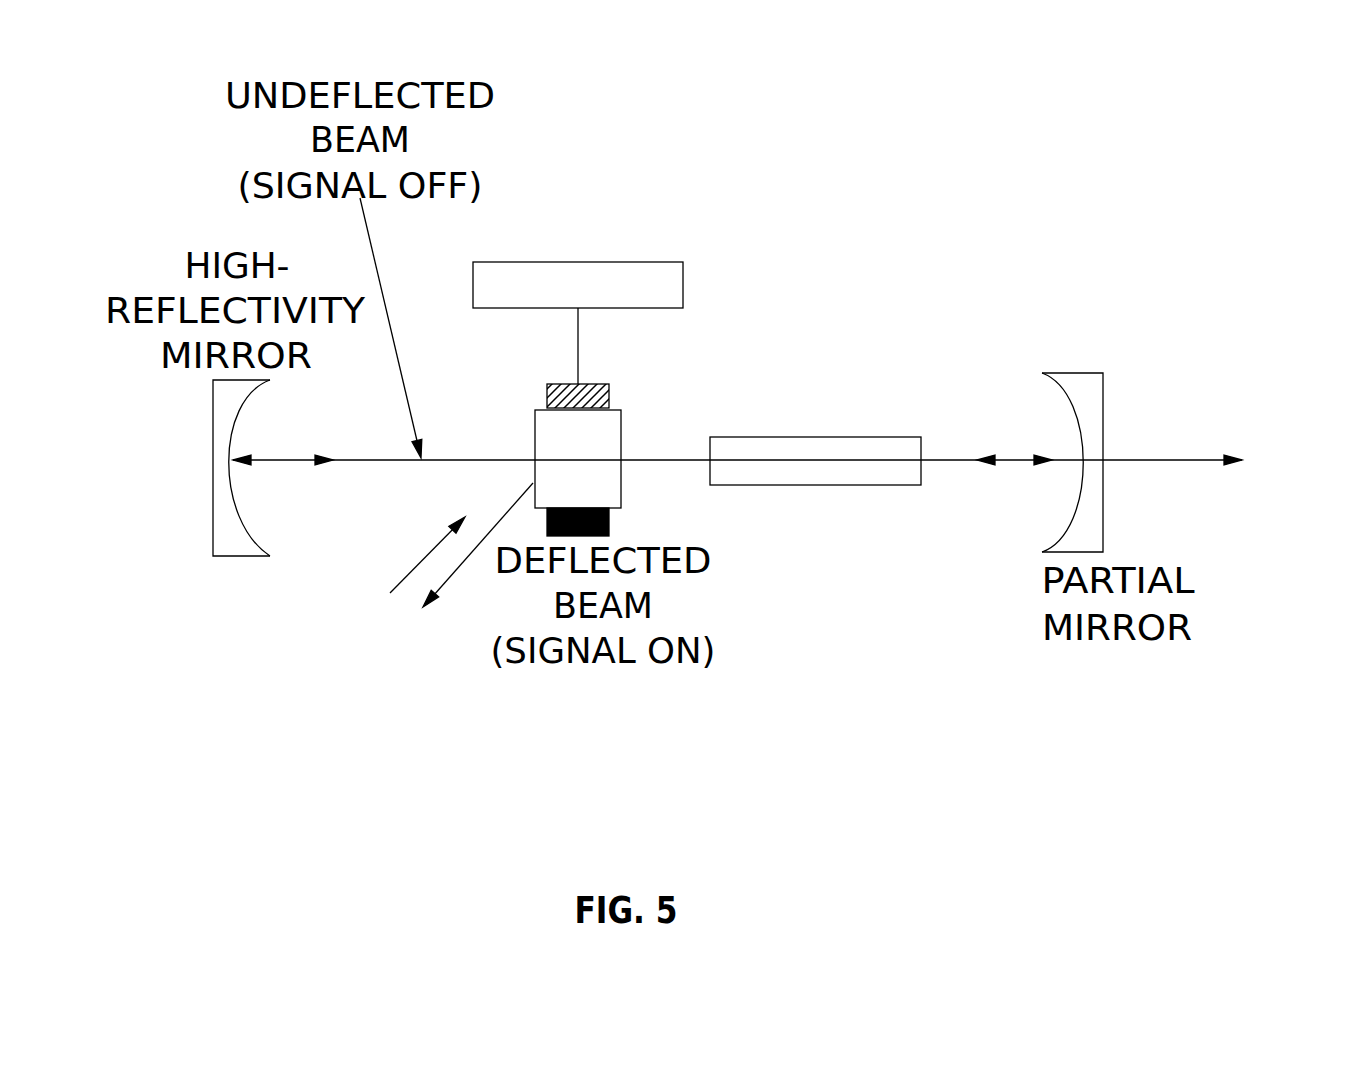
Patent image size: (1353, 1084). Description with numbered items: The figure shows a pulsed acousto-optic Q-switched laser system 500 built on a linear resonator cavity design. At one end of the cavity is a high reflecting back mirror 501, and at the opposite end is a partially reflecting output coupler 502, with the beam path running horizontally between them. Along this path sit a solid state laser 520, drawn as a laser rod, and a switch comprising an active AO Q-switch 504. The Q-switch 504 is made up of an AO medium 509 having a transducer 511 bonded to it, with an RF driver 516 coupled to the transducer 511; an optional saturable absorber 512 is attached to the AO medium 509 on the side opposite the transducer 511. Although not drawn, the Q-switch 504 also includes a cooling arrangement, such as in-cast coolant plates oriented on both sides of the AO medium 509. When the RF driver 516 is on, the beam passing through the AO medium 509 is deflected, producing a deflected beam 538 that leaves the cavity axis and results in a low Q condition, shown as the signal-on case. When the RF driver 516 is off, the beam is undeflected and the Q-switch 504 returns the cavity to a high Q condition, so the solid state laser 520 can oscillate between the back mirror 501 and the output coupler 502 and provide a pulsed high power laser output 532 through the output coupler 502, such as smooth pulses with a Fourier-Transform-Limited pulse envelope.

The pulsed AO Q-switched laser system 500 is at (822, 650).
The high reflecting back mirror 501 is at (235, 557).
The partially reflecting output coupler 502 is at (1083, 512).
The active AO Q-switch 504 is at (407, 571).
The AO medium 509 is at (535, 445).
The transducer 511 is at (609, 395).
The saturable absorber 512 is at (609, 525).
The RF driver 516 is at (622, 272).
The solid state laser 520 is at (922, 437).
The pulsed high power laser output 532 is at (1123, 460).
The deflected beam 538 is at (452, 578).